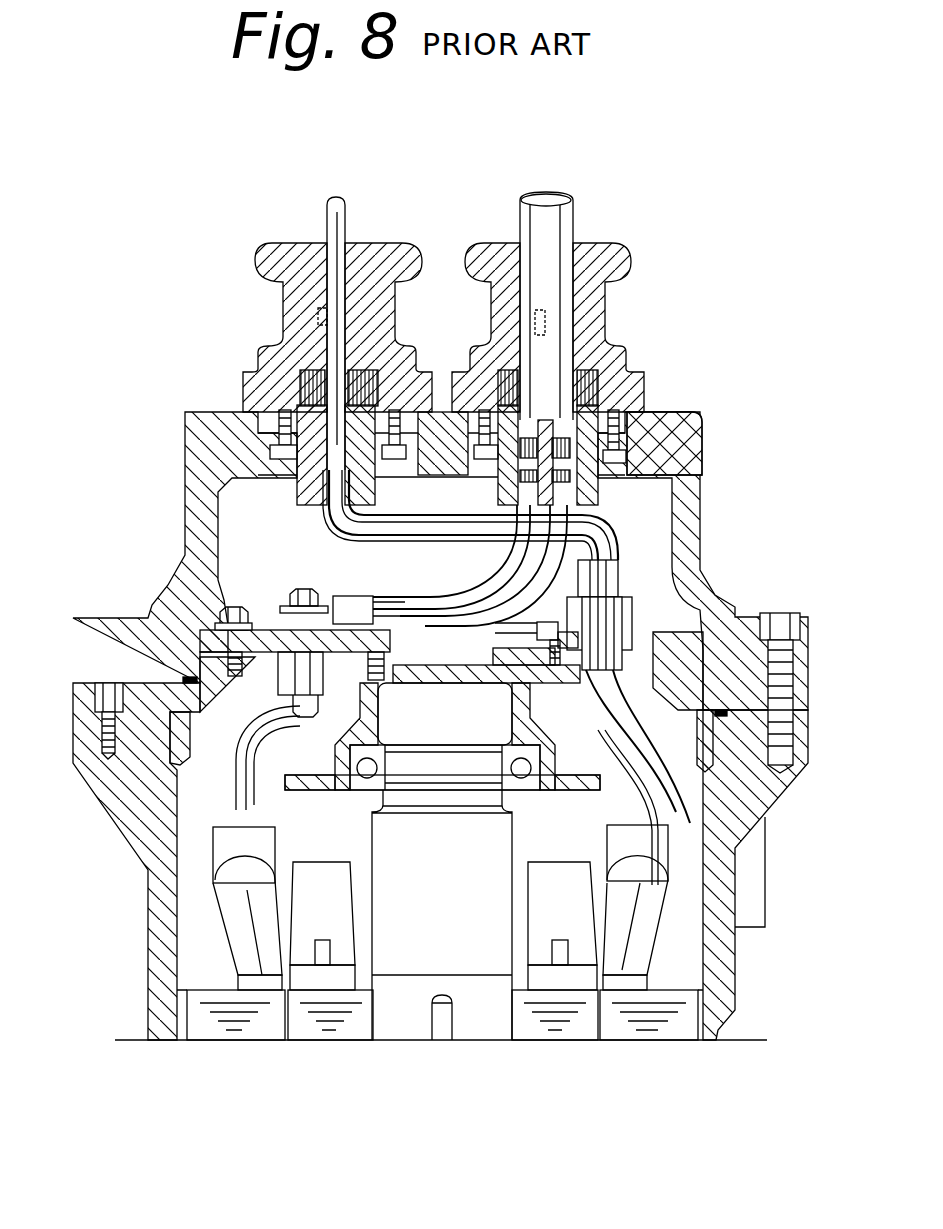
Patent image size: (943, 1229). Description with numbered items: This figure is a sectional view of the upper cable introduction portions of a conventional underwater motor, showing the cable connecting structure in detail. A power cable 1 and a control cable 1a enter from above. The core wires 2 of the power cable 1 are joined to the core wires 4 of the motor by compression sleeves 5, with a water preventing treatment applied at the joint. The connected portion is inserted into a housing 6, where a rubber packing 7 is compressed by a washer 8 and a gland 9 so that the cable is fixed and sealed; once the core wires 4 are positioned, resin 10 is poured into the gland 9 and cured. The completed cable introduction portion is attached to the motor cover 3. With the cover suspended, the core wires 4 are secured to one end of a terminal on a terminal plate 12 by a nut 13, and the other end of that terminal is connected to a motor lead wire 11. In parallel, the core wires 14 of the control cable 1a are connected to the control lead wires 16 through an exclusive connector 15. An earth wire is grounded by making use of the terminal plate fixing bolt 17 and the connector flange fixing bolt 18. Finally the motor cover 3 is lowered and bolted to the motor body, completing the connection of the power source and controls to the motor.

The power cable 1 is at (560, 215).
The control cable 1a is at (330, 222).
The core wires 2 is at (645, 400).
The motor cover 3 is at (682, 530).
The core wires 4 is at (560, 500).
The compression sleeves 5 is at (690, 412).
The housing 6 is at (620, 252).
The rubber packing 7 is at (628, 360).
The washer 8 is at (628, 392).
The gland 9 is at (580, 520).
The resin 10 is at (603, 458).
The motor lead wire 11 is at (237, 770).
The terminal plate 12 is at (285, 604).
The nut 13 is at (335, 598).
The core wires 14 is at (332, 513).
The exclusive connector 15 is at (602, 614).
The control lead wires 16 is at (705, 787).
The terminal plate fixing bolt 17 is at (228, 608).
The connector flange fixing bolt 18 is at (618, 567).